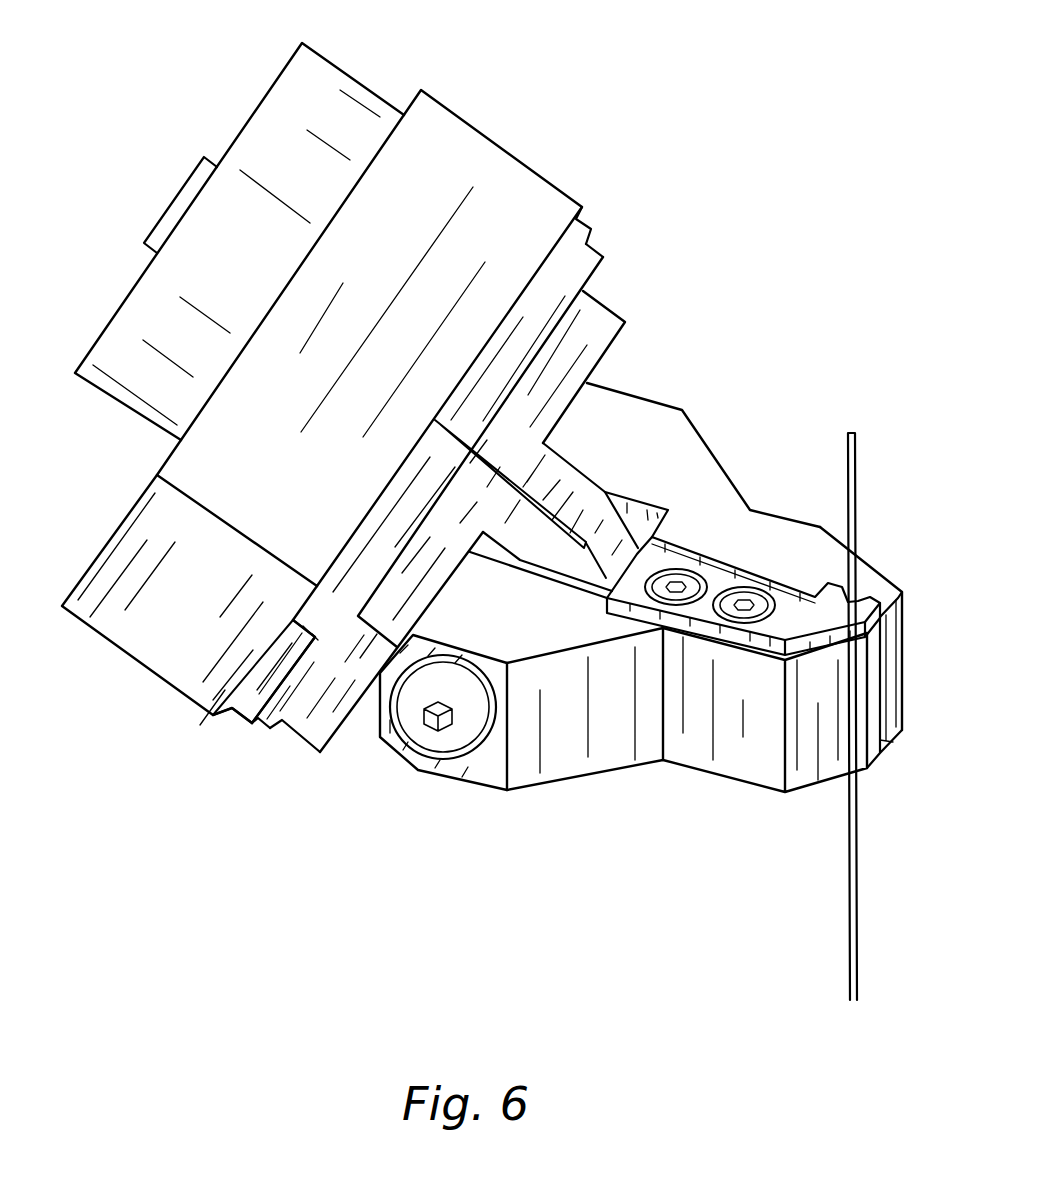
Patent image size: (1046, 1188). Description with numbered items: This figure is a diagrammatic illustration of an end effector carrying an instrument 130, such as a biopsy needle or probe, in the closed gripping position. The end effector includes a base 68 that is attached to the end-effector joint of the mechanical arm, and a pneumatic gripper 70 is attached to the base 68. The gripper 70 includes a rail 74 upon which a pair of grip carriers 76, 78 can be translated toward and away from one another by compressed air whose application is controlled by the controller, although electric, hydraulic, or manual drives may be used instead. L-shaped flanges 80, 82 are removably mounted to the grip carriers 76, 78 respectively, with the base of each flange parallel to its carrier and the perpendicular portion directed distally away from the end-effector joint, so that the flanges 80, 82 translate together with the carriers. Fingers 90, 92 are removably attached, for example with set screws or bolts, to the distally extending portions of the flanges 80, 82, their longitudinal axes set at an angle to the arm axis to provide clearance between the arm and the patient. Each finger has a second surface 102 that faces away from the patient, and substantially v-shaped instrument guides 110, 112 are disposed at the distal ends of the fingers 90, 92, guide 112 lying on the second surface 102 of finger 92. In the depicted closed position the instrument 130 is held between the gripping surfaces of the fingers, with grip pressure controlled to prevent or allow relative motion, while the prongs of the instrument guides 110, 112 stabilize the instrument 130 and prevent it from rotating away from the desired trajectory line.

The base 68 is at (120, 406).
The pneumatic gripper 70 is at (487, 140).
The rail 74 is at (580, 223).
The grip carrier 76 is at (598, 253).
The grip carrier 78 is at (258, 727).
The L-shaped flange 80 is at (603, 307).
The L-shaped flange 82 is at (298, 738).
The finger 90 is at (657, 612).
The finger 92 is at (562, 753).
The second surface 102 is at (637, 438).
The instrument guide 110 is at (890, 745).
The instrument guide 112 is at (757, 642).
The instrument 130 is at (855, 472).